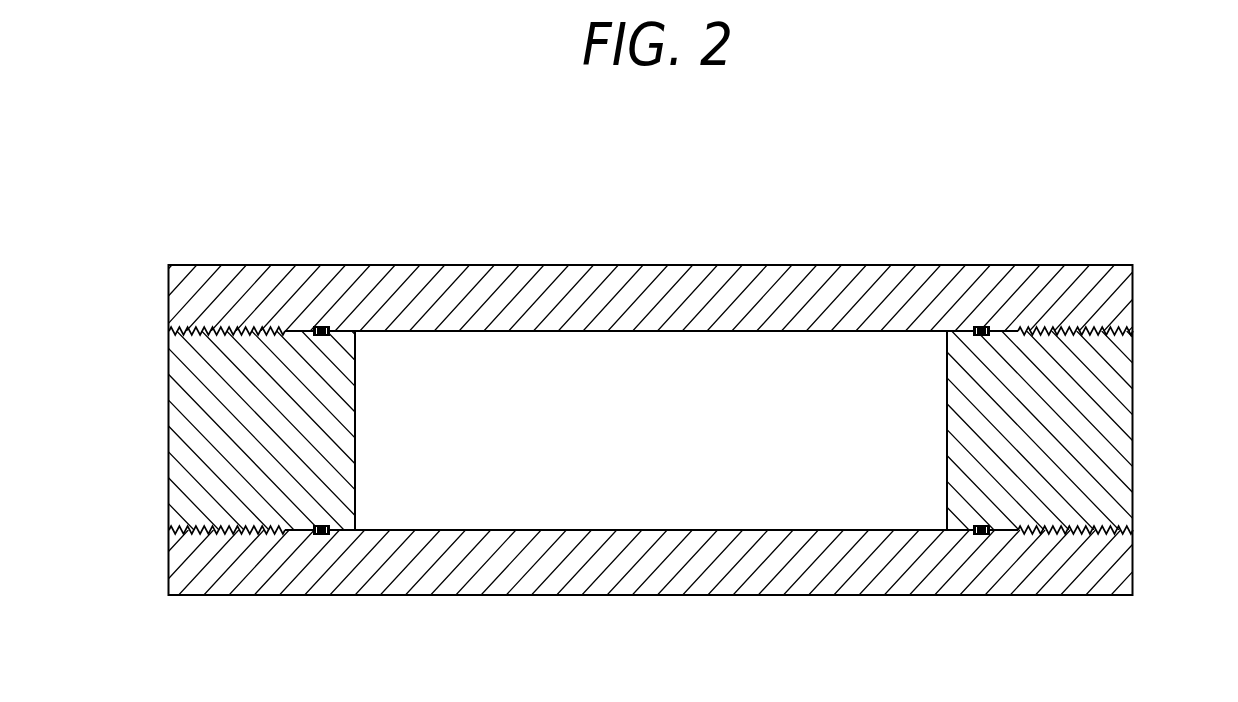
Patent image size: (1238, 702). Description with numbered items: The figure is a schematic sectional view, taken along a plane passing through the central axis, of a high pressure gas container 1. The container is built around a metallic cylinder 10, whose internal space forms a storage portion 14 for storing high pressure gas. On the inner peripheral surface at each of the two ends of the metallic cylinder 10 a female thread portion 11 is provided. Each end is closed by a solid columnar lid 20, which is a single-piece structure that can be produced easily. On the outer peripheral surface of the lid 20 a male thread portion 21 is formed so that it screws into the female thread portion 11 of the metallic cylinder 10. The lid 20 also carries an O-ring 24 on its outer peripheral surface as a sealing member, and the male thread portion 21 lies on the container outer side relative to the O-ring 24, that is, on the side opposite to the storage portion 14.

The high pressure gas container 1 is at (743, 200).
The metallic cylinder 10 is at (845, 278).
The female thread portion 11 is at (235, 324).
The storage portion 14 is at (655, 444).
The lid 20 is at (200, 438).
The male thread portion 21 is at (210, 332).
The O-ring 24 is at (314, 325).